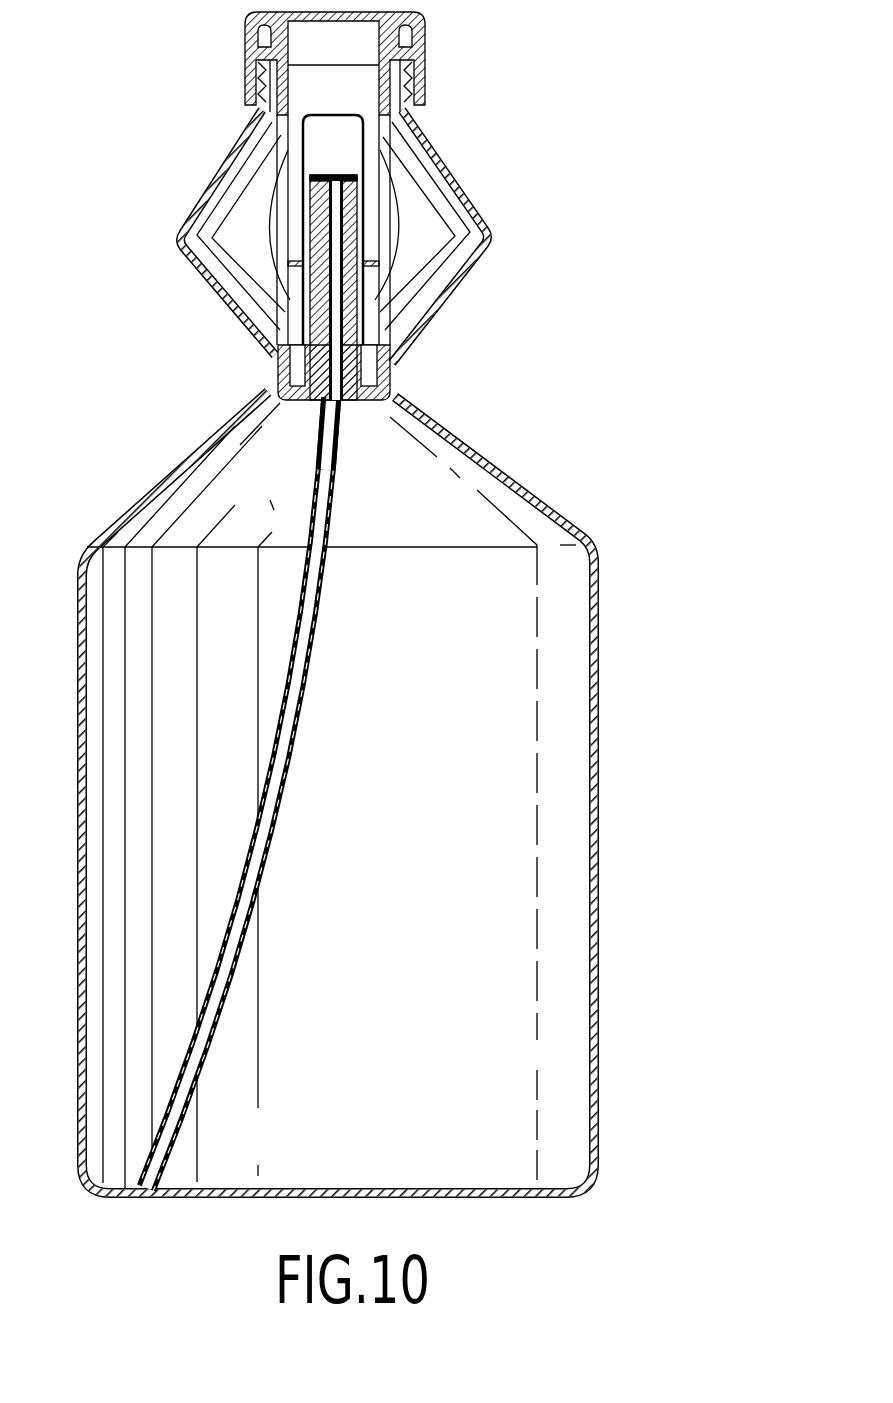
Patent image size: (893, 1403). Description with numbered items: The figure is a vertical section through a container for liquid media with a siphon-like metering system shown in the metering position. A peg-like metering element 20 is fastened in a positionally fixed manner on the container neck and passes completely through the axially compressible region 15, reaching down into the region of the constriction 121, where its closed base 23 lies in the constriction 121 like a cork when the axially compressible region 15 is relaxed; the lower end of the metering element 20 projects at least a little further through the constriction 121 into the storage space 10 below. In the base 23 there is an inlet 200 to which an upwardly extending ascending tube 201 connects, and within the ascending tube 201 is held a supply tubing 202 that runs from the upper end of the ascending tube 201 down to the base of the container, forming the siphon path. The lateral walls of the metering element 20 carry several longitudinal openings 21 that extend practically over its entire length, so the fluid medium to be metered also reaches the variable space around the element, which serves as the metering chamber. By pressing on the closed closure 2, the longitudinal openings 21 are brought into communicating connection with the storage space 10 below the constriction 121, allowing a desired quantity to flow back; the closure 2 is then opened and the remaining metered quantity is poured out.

The closure 2 is at (205, 69).
The storage space 10 is at (392, 906).
The axially compressible region 15 is at (240, 131).
The metering element 20 is at (412, 241).
The longitudinal openings 21 is at (388, 190).
The closed base 23 is at (297, 402).
The constriction 121 is at (397, 378).
The inlet 200 is at (350, 405).
The ascending tube 201 is at (387, 312).
The supply tubing 202 is at (295, 740).